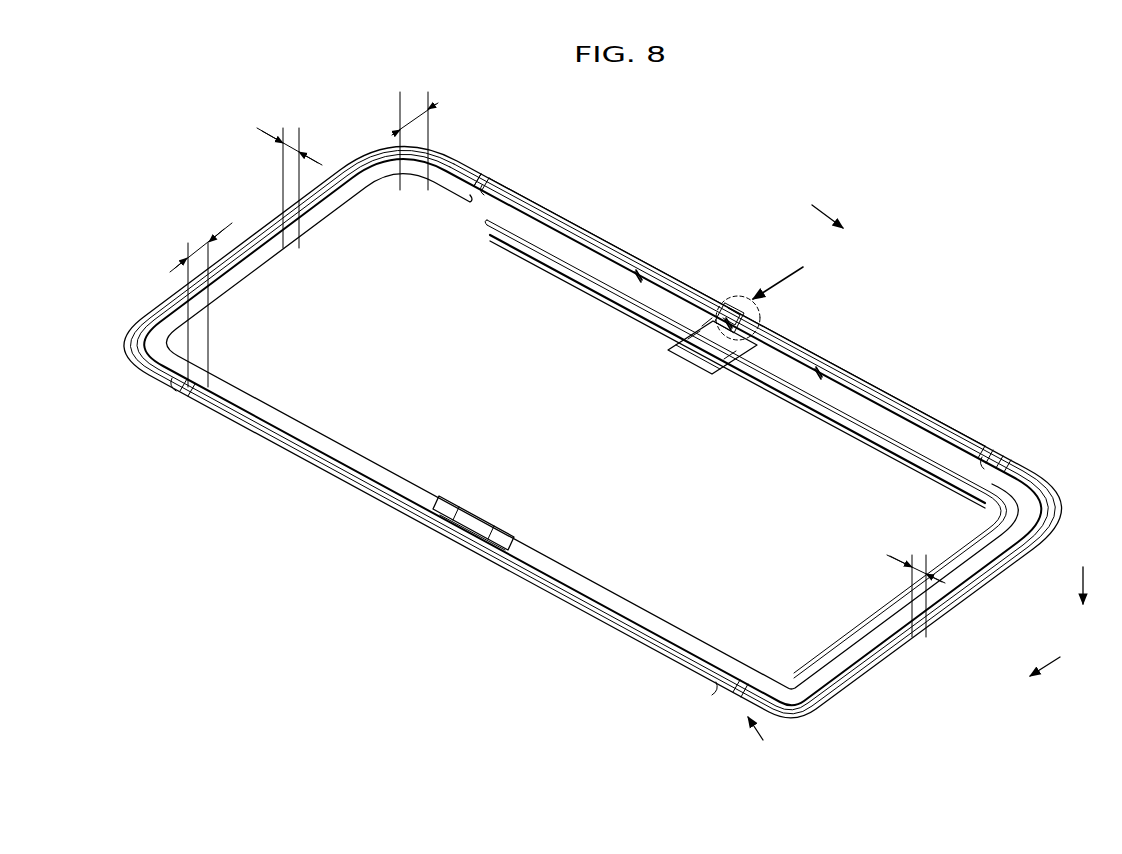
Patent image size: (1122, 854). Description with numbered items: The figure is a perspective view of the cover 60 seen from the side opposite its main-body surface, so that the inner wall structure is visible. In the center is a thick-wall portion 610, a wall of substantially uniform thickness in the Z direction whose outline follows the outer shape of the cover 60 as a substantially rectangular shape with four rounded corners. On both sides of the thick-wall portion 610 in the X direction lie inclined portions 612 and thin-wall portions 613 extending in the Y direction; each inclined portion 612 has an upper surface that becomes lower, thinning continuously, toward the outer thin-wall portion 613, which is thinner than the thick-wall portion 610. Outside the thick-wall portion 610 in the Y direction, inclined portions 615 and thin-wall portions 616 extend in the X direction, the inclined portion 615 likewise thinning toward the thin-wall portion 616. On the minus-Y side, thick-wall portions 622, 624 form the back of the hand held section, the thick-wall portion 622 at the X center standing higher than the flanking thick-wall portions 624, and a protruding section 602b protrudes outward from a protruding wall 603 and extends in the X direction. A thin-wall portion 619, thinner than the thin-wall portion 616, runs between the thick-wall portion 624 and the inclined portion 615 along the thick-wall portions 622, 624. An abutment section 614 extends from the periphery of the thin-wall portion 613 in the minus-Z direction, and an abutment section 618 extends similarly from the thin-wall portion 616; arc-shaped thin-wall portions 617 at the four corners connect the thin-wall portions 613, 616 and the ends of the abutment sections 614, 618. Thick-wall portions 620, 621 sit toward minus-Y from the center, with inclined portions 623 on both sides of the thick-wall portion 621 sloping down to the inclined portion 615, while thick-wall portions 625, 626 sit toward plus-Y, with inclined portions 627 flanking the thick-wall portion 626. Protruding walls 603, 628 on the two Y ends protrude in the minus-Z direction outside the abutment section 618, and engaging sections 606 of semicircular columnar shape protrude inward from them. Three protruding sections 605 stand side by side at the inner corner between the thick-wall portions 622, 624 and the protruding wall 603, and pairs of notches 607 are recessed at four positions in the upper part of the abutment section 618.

The cover 60 is at (968, 305).
The protruding section 602b is at (738, 308).
The protruding wall 603 is at (557, 219).
The protruding section 605 is at (639, 271).
The engaging section 606 is at (734, 303).
The notch 607 is at (445, 172).
The thick-wall portion 610 is at (507, 277).
The inclined portion 612 is at (263, 247).
The thin-wall portion 613 is at (166, 294).
The abutment section 614 is at (131, 338).
The inclined portion 615 is at (297, 427).
The thin-wall portion 616 is at (200, 390).
The thin-wall portion 617 is at (380, 162).
The abutment section 618 is at (462, 180).
The thin-wall portion 619 is at (587, 282).
The thick-wall portion 620 is at (676, 380).
The thick-wall portion 621 is at (720, 355).
The thick-wall portion 622 is at (700, 326).
The inclined portion 623 is at (673, 334).
The thick-wall portion 624 is at (594, 262).
The thick-wall portion 625 is at (490, 518).
The thick-wall portion 626 is at (480, 530).
The inclined portion 627 is at (447, 507).
The protruding wall 628 is at (307, 457).